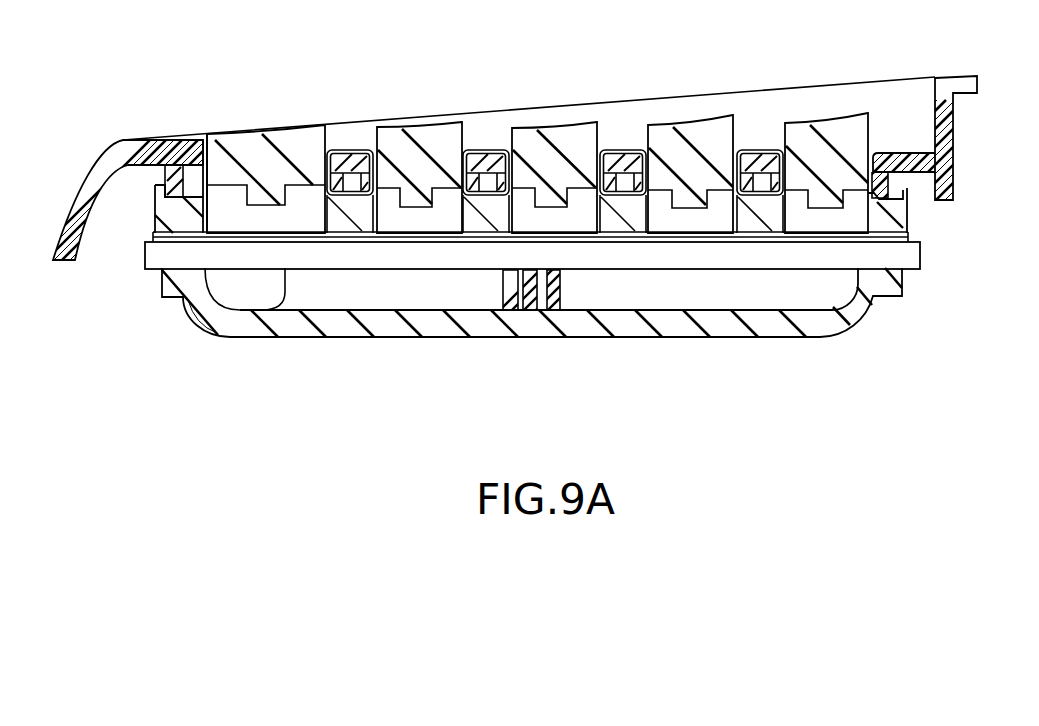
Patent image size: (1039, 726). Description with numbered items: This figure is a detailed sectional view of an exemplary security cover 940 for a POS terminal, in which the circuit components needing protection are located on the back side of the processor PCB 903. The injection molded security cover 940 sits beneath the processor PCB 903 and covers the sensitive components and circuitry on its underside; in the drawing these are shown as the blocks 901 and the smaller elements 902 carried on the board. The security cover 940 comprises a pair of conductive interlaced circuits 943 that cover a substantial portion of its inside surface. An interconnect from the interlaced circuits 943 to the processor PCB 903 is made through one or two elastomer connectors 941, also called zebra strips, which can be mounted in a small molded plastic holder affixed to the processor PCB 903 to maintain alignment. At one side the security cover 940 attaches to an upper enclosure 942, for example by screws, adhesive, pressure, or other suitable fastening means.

The contact blocks 901 is at (248, 129).
The seal rings 902 is at (447, 192).
The processor PCB 903 is at (277, 312).
The security cover 940 is at (860, 322).
The elastomer connectors 941 is at (533, 312).
The upper enclosure 942 is at (160, 134).
The conductive interlaced circuits 943 is at (758, 313).